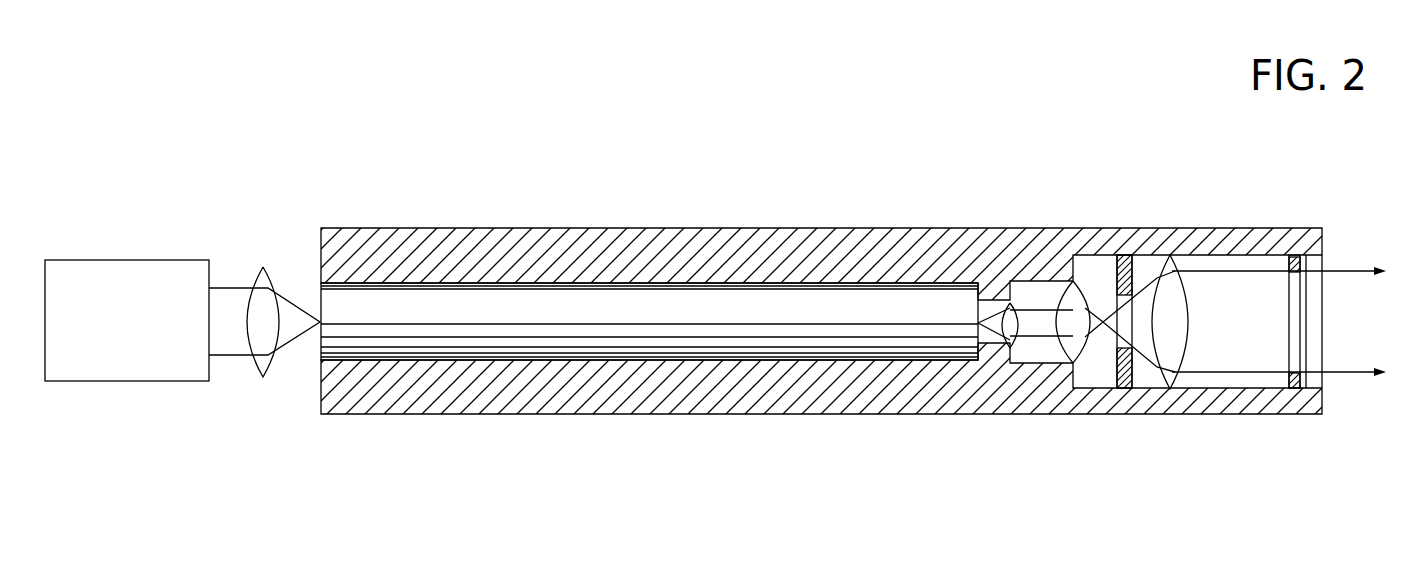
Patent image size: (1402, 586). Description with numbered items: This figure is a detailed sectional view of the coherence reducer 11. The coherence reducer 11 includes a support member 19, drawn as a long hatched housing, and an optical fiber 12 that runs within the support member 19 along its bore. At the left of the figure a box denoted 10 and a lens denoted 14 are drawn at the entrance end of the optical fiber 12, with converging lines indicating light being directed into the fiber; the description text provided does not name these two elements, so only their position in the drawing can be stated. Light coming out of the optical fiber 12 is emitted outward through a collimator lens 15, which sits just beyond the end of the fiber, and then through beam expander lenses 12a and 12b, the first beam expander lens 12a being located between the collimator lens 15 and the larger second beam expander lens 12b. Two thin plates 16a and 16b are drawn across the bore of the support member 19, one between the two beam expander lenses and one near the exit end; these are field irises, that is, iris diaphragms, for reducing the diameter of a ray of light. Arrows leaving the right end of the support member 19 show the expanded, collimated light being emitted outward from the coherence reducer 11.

The light source 10 is at (118, 278).
The coherence reducer 11 is at (793, 166).
The optical fiber 12 is at (643, 300).
The beam expander lens 12a is at (1075, 353).
The beam expander lens 12b is at (1180, 297).
The coupling lens 14 is at (265, 282).
The collimator lens 15 is at (1015, 337).
The field iris 16a is at (1130, 360).
The field iris 16b is at (1299, 388).
The support member 19 is at (933, 257).